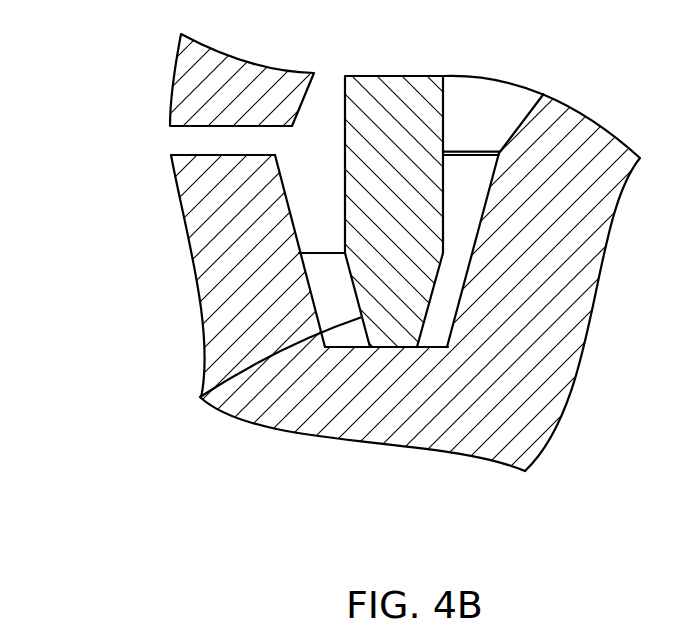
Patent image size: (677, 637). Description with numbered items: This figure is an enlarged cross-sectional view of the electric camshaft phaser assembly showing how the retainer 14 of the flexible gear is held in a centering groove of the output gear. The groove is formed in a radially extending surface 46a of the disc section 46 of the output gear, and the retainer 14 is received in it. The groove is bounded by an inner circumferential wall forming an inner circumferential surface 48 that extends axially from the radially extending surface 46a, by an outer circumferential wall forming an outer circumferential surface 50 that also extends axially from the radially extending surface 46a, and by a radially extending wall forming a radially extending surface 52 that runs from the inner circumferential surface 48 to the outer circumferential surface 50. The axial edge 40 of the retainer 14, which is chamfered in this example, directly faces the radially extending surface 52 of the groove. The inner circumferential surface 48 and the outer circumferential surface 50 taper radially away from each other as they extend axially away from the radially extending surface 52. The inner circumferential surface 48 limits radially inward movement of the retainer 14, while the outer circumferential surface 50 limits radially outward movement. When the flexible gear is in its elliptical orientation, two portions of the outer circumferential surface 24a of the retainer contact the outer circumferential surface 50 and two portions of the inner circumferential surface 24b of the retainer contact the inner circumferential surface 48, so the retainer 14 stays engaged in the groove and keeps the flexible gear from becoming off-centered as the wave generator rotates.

The retainer 14 is at (305, 173).
The outer circumferential surface of the retainer 24a is at (437, 275).
The inner circumferential surface of the retainer 24b is at (200, 397).
The axial edge 40 is at (403, 347).
The disc section 46 is at (253, 321).
The radially extending surface 46a is at (187, 160).
The inner circumferential surface 48 is at (288, 202).
The outer circumferential surface 50 is at (480, 227).
The radially extending surface 52 is at (353, 348).